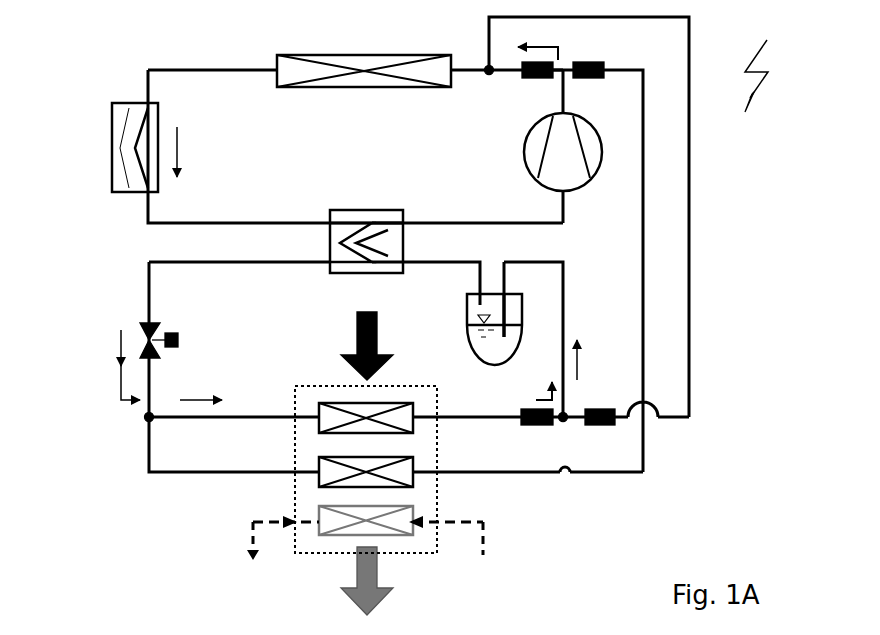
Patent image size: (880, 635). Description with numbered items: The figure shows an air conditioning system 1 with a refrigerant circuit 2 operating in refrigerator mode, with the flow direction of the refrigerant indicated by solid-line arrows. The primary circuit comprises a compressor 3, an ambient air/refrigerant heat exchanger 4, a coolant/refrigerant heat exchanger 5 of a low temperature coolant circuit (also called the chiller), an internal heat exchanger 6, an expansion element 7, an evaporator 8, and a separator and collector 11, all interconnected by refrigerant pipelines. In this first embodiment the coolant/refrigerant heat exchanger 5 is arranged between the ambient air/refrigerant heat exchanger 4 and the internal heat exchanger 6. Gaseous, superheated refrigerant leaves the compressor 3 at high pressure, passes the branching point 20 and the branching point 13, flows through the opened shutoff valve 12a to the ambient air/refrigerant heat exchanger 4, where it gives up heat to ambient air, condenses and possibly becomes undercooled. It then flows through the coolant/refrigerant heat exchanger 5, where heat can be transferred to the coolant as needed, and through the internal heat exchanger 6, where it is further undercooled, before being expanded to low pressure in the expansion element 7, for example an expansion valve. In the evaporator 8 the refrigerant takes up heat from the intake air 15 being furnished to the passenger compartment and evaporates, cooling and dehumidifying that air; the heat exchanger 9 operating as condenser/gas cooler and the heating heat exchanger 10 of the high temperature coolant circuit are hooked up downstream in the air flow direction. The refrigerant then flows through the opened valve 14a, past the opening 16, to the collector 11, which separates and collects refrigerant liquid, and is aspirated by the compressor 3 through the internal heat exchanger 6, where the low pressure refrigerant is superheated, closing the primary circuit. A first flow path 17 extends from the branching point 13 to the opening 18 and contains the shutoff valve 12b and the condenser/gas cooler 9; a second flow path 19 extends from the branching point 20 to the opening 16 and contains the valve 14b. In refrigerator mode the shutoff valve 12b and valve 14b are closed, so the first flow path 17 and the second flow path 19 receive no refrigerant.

The air conditioning system 1 is at (767, 63).
The refrigerant circuit 2 is at (712, 347).
The compressor 3 is at (540, 163).
The ambient air/refrigerant heat exchanger 4 is at (277, 58).
The coolant/refrigerant heat exchanger 5 is at (120, 172).
The internal heat exchanger 6 is at (375, 220).
The expansion element 7 is at (143, 328).
The evaporator 8 is at (330, 413).
The heat exchanger operating as condenser/gas cooler 9 is at (330, 470).
The heating heat exchanger 10 is at (410, 525).
The separator and collector 11 is at (465, 333).
The shutoff valve 12a is at (527, 78).
The shutoff valve 12b is at (598, 62).
The branching point 13 is at (557, 74).
The valve 14a is at (533, 427).
The valve 14b is at (600, 427).
The intake air 15 is at (352, 326).
The opening 16 is at (565, 425).
The first flow path 17 is at (647, 443).
The opening 18 is at (143, 419).
The second flow path 19 is at (692, 240).
The branching point 20 is at (487, 67).